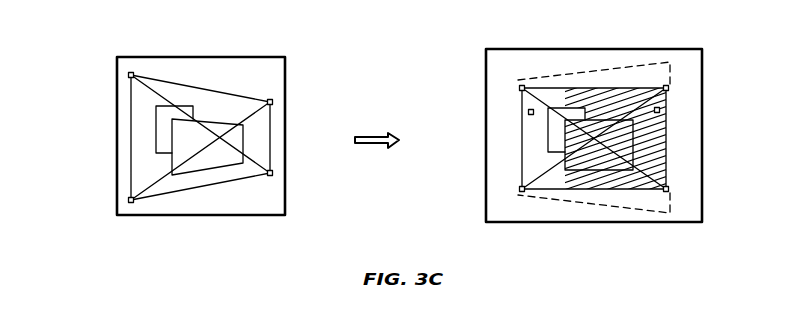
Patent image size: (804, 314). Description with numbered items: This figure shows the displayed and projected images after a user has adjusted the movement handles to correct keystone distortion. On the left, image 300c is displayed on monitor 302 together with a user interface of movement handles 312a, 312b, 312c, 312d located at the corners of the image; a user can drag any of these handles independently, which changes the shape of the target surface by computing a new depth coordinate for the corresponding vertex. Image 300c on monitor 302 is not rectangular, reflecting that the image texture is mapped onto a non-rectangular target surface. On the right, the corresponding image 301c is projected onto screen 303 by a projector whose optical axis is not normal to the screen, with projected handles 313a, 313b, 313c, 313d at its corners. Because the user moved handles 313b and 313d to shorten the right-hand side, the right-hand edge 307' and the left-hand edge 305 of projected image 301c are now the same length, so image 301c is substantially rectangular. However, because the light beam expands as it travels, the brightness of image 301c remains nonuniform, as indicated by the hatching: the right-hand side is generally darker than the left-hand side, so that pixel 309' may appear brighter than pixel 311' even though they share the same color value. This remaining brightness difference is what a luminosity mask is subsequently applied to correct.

The monitor 302 is at (225, 57).
The image 300c is at (137, 132).
The movement handle 312a is at (131, 74).
The movement handle 312b is at (272, 101).
The movement handle 312c is at (131, 200).
The movement handle 312d is at (272, 174).
The screen 303 is at (673, 49).
The left-hand edge 305 is at (522, 132).
The right-hand edge 307' is at (639, 126).
The projected image 301c is at (543, 185).
The projected handle 313a is at (522, 88).
The projected handle 313b is at (666, 88).
The projected handle 313c is at (522, 190).
The projected handle 313d is at (666, 189).
The pixel 309' is at (485, 94).
The pixel 311' is at (706, 97).